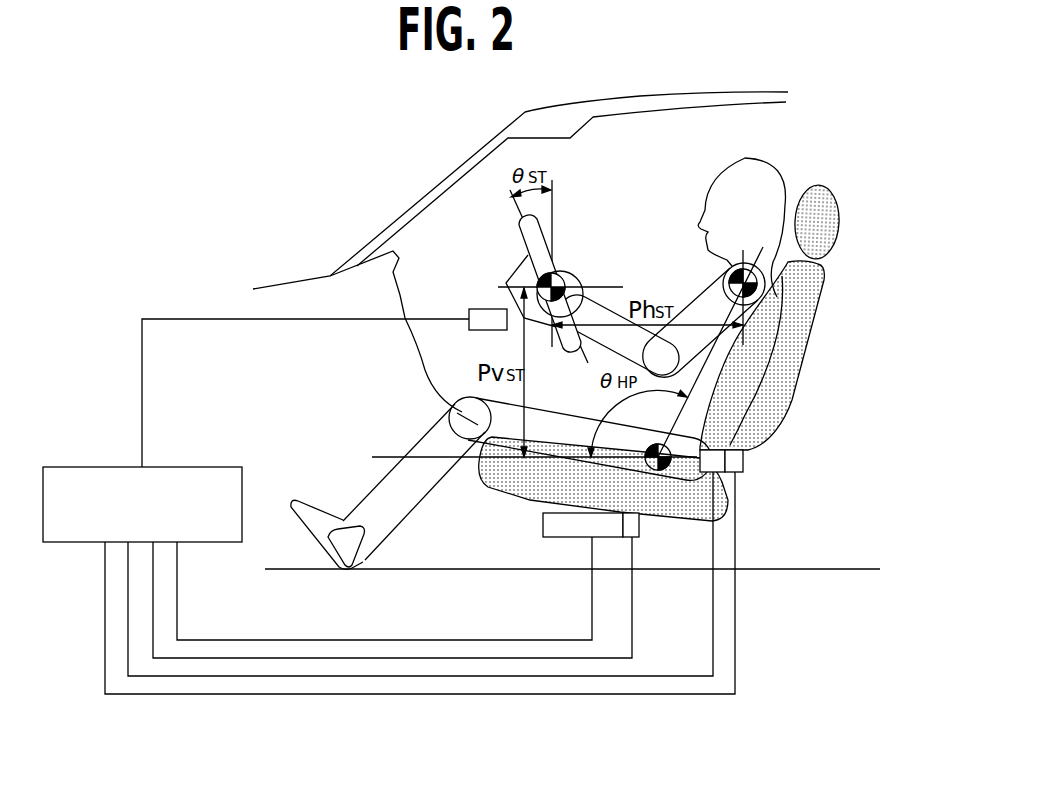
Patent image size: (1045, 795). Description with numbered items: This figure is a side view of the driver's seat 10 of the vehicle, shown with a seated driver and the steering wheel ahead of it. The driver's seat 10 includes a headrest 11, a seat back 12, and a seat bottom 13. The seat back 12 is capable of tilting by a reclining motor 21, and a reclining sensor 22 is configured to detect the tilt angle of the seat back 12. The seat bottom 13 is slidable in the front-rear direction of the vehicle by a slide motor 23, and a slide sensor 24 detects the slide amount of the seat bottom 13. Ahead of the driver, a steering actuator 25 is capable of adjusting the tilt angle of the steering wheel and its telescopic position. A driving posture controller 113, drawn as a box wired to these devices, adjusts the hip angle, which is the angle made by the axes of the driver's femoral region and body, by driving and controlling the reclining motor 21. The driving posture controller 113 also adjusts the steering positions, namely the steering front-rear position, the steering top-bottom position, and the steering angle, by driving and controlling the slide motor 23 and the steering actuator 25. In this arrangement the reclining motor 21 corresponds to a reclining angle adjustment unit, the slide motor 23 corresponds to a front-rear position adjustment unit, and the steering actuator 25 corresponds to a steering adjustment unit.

The driver's seat 10 is at (679, 313).
The headrest 11 is at (833, 218).
The seat back 12 is at (812, 292).
The seat bottom 13 is at (493, 480).
The reclining motor 21 is at (718, 447).
The reclining sensor 22 is at (739, 461).
The slide motor 23 is at (568, 540).
The slide sensor 24 is at (639, 530).
The steering actuator 25 is at (477, 309).
The driving posture controller 113 is at (88, 467).